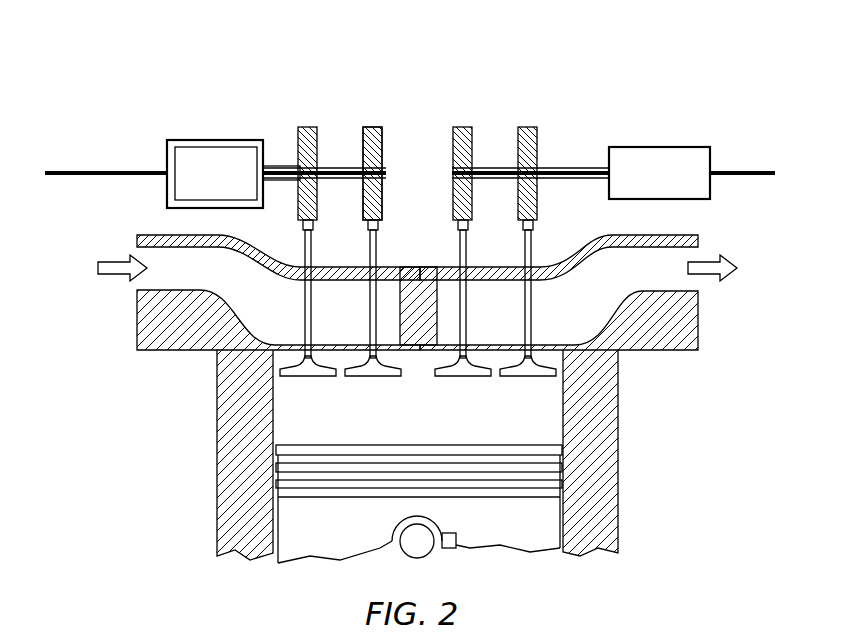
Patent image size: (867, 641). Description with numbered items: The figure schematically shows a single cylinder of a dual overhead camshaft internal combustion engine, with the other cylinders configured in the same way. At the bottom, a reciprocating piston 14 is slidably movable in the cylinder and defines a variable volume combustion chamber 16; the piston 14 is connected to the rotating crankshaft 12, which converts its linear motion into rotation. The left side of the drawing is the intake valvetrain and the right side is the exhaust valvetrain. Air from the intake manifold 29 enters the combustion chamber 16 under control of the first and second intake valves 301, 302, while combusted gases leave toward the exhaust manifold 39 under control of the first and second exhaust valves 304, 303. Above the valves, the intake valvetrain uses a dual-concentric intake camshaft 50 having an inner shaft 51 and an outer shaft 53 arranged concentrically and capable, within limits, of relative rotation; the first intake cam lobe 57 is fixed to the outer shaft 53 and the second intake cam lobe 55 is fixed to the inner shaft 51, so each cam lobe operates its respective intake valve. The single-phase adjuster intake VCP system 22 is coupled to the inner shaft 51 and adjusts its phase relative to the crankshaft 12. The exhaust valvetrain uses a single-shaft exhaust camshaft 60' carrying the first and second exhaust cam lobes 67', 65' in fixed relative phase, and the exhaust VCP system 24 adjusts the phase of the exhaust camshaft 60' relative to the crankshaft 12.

The crankshaft 12 is at (78, 172).
The single-phase adjuster intake VCP system 22 is at (187, 150).
The exhaust VCP system 24 is at (662, 150).
The dual-concentric intake camshaft 50 is at (255, 86).
The outer shaft 53 is at (276, 165).
The first intake cam lobe 57 is at (298, 140).
The inner shaft 51 is at (345, 168).
The second intake cam lobe 55 is at (383, 134).
The single-shaft exhaust camshaft 60' is at (536, 102).
The second exhaust cam lobe 65' is at (487, 147).
The first exhaust cam lobe 67' is at (560, 153).
The intake manifold 29 is at (177, 267).
The exhaust manifold 39 is at (630, 266).
The first intake valve 301 is at (304, 318).
The second intake valve 302 is at (370, 310).
The second exhaust valve 303 is at (463, 322).
The first exhaust valve 304 is at (530, 318).
The combustion chamber 16 is at (413, 420).
The piston 14 is at (352, 538).